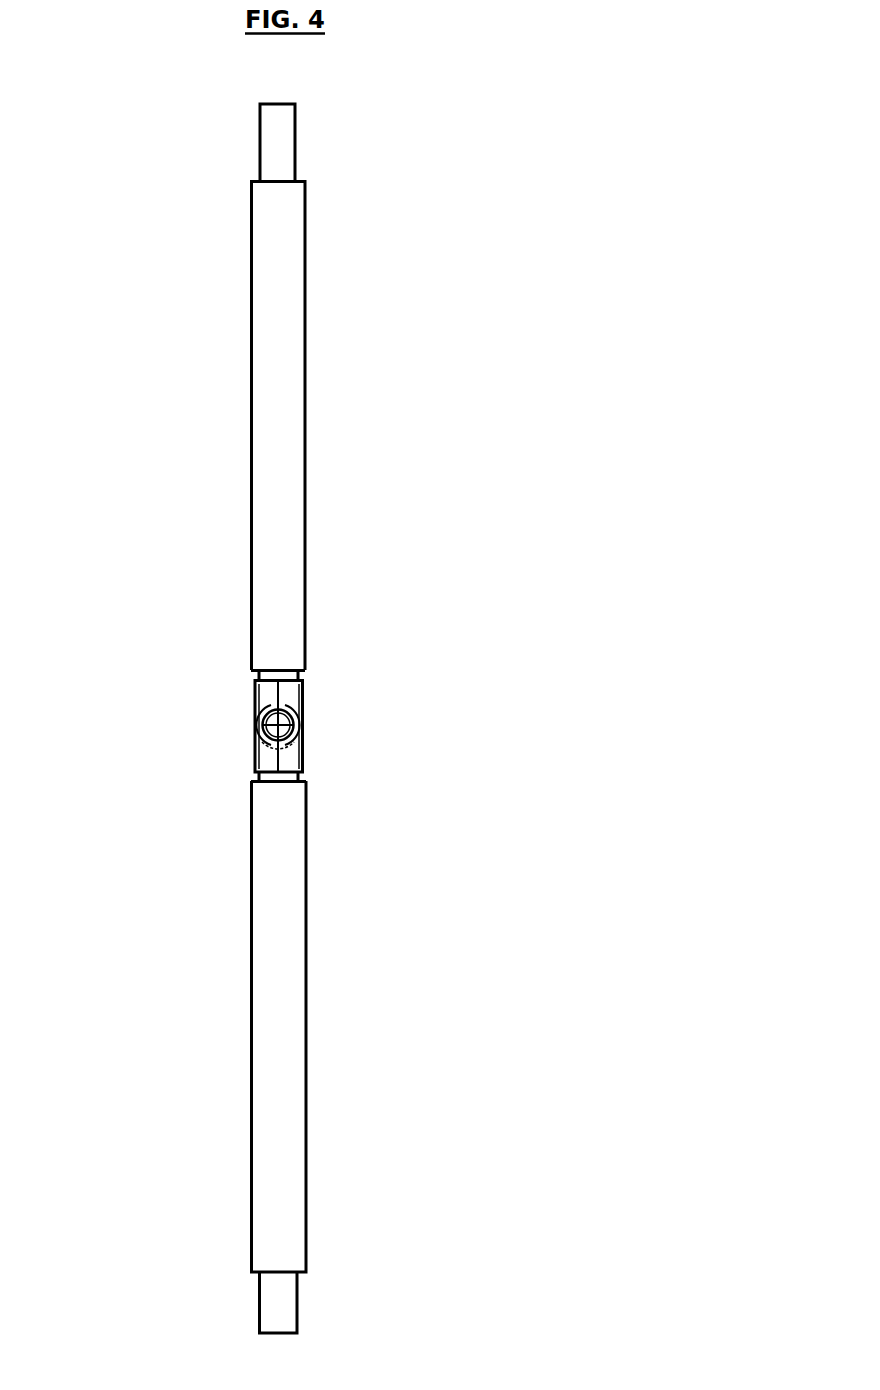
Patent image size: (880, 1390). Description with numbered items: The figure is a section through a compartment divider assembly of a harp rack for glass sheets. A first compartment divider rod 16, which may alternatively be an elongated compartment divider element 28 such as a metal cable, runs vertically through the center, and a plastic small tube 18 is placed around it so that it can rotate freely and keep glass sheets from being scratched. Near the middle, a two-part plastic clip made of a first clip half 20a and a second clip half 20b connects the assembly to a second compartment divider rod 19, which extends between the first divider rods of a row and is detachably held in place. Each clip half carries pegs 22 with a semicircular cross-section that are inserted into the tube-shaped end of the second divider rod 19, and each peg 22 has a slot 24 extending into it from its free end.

The first compartment divider rod 16 is at (295, 718).
The first compartment divider element 28 is at (283, 156).
The plastic small tube 18 is at (283, 268).
The first clip half 20a is at (290, 695).
The second clip half 20b is at (262, 697).
The peg 22 is at (283, 718).
The slot 24 is at (270, 727).
The second compartment divider rod 19 is at (295, 742).